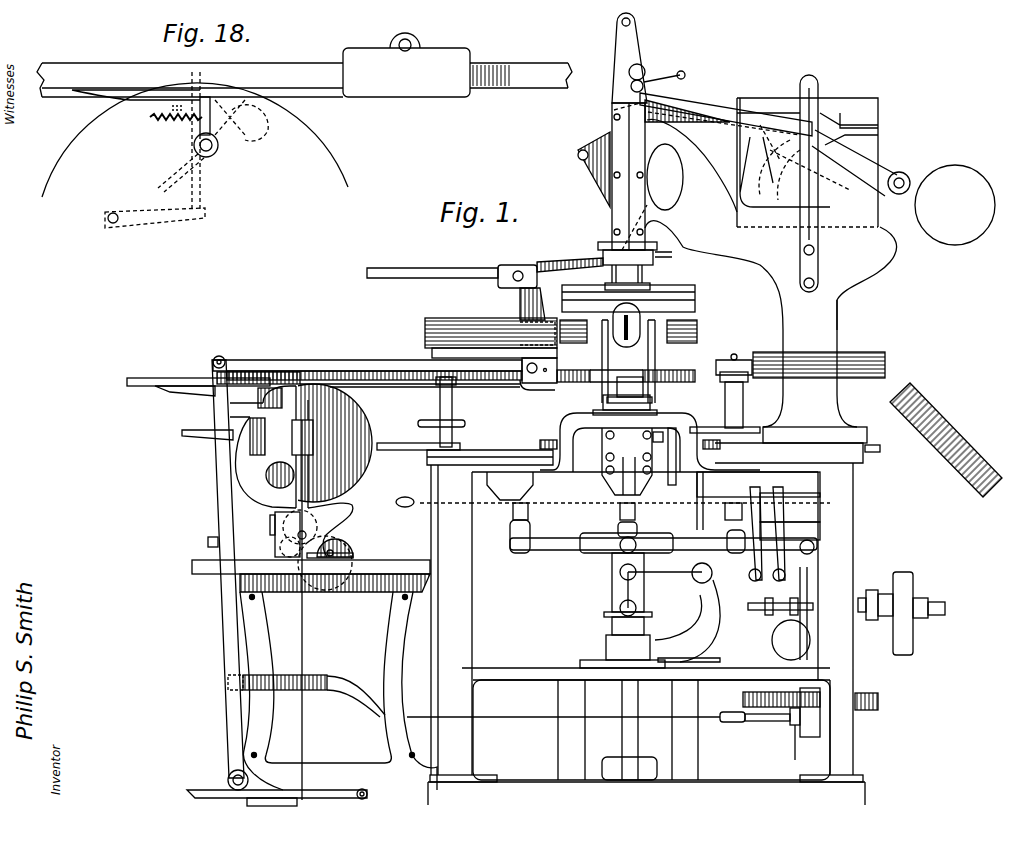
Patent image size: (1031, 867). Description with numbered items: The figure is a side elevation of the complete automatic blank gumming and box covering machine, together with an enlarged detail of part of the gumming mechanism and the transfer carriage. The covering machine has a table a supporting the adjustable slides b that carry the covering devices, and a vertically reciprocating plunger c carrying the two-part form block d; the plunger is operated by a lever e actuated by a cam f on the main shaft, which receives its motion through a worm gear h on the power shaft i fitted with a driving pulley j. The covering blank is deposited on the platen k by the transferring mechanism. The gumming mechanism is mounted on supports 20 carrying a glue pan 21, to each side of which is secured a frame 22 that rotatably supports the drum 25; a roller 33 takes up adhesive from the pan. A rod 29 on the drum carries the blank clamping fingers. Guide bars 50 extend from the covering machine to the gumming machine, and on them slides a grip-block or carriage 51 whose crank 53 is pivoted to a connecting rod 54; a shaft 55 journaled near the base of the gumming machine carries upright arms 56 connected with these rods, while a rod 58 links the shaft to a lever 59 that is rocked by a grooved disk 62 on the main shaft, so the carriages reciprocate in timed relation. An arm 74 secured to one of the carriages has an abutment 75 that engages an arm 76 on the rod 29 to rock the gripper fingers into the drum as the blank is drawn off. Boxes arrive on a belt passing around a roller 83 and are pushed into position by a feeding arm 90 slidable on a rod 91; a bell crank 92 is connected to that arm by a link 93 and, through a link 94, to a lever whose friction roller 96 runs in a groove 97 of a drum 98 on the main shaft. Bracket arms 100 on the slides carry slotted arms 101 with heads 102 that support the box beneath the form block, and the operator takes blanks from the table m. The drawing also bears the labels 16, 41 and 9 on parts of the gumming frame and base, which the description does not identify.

In FIG. 18, the guide bars 50 is at (304, 80).
In FIG. 1, the guide bars 50 is at (327, 363).
In FIG. 18, the grip-block or carriage 51 is at (385, 90).
In FIG. 1, the grip-block or carriage 51 is at (558, 372).
In FIG. 18, the arm 74 is at (150, 84).
In FIG. 1, the arm 74 is at (432, 386).
In FIG. 18, the abutment 75 is at (205, 95).
In FIG. 18, the arm 76 is at (198, 128).
In FIG. 18, the rod 29 is at (212, 150).
In FIG. 18, the drum 25 is at (195, 140).
In FIG. 1, the drum 25 is at (355, 418).
In FIG. 1, the link 94 is at (612, 108).
In FIG. 1, the bell crank 92 is at (600, 168).
In FIG. 1, the lever e is at (700, 102).
In FIG. 1, the friction roller 96 is at (675, 103).
In FIG. 1, the groove 97 is at (878, 124).
In FIG. 1, the drum 98 is at (878, 152).
In FIG. 1, the cam f is at (785, 166).
In FIG. 1, the plunger c is at (610, 240).
In FIG. 1, the link 93 is at (570, 259).
In FIG. 1, the rod 91 is at (445, 274).
In FIG. 1, the feeding arm 90 is at (525, 292).
In FIG. 1, the two-part form block d is at (696, 306).
In FIG. 1, the slotted arm 101 is at (640, 313).
In FIG. 1, the platen k is at (626, 377).
In FIG. 1, the roller 83 is at (430, 352).
In FIG. 1, the connecting rod 54 is at (447, 373).
In FIG. 1, the plate 16 is at (322, 388).
In FIG. 1, the head 102 is at (582, 372).
In FIG. 1, the bracket arms 100 is at (650, 366).
In FIG. 1, the crank 53 is at (537, 390).
In FIG. 1, the adjustable slides b is at (390, 445).
In FIG. 1, the table a is at (502, 458).
In FIG. 1, the table m is at (198, 403).
In FIG. 1, the upright arm 56 is at (220, 525).
In FIG. 1, the frame 22 is at (340, 517).
In FIG. 1, the roller 33 is at (352, 550).
In FIG. 1, the glue vessel or pan 21 is at (380, 565).
In FIG. 1, the supports 20 is at (265, 638).
In FIG. 1, the rod 58 is at (340, 680).
In FIG. 1, the base plate 41 is at (210, 792).
In FIG. 1, the shaft 55 is at (250, 780).
In FIG. 1, the worm gear h is at (802, 612).
In FIG. 1, the grooved disk 62 is at (781, 691).
In FIG. 1, the lever 59 is at (757, 722).
In FIG. 1, the bracket 9 is at (812, 724).
In FIG. 1, the driving pulley j is at (908, 575).
In FIG. 1, the power shaft i is at (940, 605).